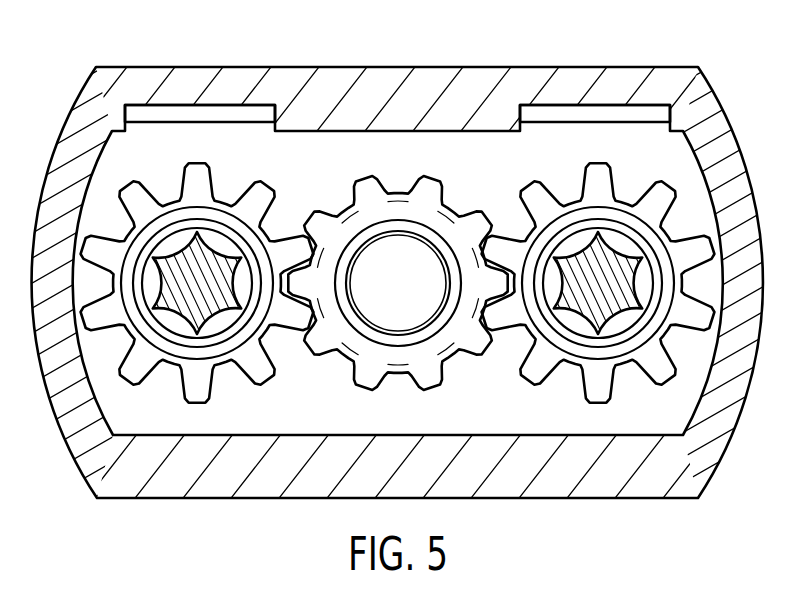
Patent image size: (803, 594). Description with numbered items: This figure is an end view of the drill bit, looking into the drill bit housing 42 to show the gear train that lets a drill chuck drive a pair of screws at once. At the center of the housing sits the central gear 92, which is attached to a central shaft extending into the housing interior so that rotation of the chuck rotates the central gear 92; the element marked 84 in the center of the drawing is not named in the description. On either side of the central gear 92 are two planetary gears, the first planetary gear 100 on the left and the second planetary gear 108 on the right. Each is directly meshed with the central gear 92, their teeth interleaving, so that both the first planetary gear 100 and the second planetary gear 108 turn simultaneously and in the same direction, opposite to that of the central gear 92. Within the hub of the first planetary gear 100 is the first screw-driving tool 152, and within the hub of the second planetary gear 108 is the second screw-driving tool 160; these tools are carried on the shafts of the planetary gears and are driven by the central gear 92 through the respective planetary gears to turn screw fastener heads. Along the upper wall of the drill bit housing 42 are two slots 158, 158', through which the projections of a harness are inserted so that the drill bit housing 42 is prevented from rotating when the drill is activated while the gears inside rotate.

The drill bit housing 42 is at (62, 90).
The slot 158 is at (200, 80).
The slot 158' is at (595, 79).
The first planetary gear 100 is at (252, 370).
The first screw-driving tool 152 is at (200, 250).
The central gear 92 is at (377, 352).
The drive shaft 84 is at (412, 292).
The second planetary gear 108 is at (598, 388).
The second screw-driving tool 160 is at (610, 277).